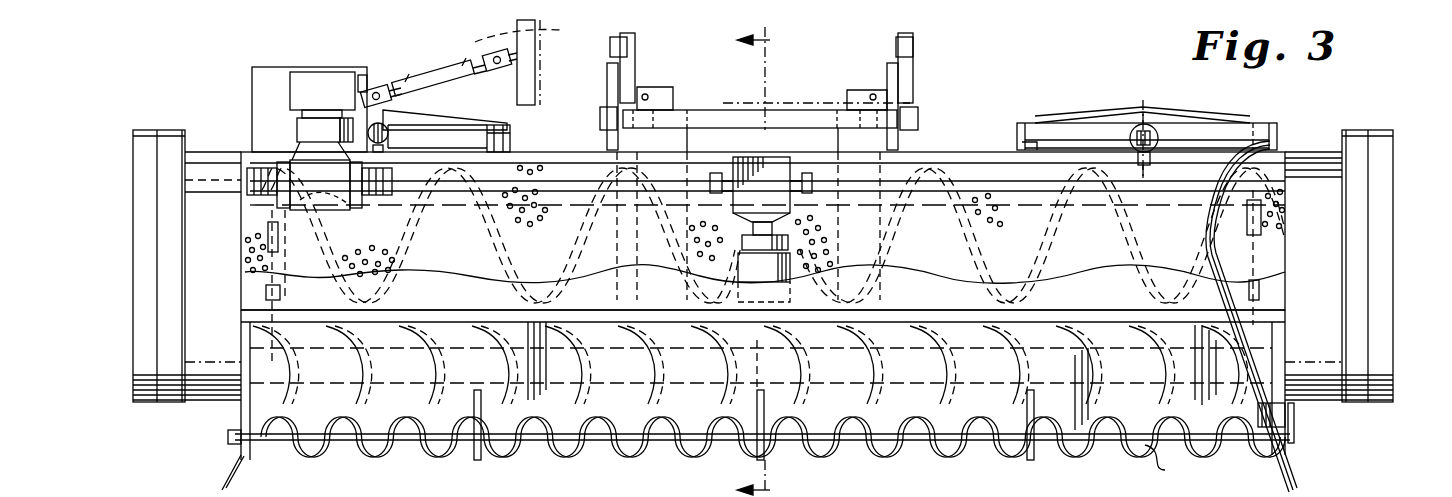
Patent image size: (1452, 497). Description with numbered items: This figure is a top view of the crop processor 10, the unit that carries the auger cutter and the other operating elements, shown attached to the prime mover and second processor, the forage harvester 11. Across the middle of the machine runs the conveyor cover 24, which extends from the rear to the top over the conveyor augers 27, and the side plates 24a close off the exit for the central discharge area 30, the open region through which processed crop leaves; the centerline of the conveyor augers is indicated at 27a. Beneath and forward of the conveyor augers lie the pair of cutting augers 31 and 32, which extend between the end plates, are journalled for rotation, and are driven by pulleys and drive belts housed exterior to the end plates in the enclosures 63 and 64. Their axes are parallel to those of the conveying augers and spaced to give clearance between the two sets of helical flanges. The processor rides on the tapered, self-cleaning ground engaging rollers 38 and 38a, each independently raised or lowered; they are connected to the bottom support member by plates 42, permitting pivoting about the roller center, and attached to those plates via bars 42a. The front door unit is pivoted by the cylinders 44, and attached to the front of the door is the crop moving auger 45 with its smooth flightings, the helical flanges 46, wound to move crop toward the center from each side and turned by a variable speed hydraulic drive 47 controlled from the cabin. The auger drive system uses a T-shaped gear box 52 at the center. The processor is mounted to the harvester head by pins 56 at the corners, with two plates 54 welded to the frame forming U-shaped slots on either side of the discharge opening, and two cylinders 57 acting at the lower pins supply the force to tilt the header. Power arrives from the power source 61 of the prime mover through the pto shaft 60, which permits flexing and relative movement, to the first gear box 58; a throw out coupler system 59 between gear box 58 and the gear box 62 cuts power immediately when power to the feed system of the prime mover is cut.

The crop processor 10 is at (162, 420).
The forage harvester 11 is at (550, 124).
The conveyor cover 24 is at (441, 242).
The side plates 24a is at (688, 125).
The conveyor augers 27 is at (958, 283).
The trough partition center line 27a is at (586, 292).
The central discharge area 30 is at (740, 252).
The cutting auger 31 is at (1006, 377).
The cutting auger 32 is at (495, 376).
The ground engaging roller 38 is at (1225, 120).
The ground engaging roller 38a is at (432, 116).
The plates 42 is at (1017, 140).
The bars 42a is at (1125, 97).
The cylinders 44 is at (262, 215).
The crop moving auger 45 is at (448, 462).
The helical flanges 46 is at (1145, 445).
The hydraulic drive 47 is at (1298, 420).
The T-shaped gear box 52 is at (788, 150).
The plates 54 is at (602, 128).
The pins 56 is at (645, 95).
The cylinders 57 is at (607, 88).
The first gear box 58 is at (290, 86).
The throw out coupler system 59 is at (312, 128).
The pto shaft 60 is at (445, 70).
The power source 61 is at (488, 41).
The gear box 62 is at (341, 190).
The enclosure 63 is at (1398, 208).
The enclosure 64 is at (115, 300).